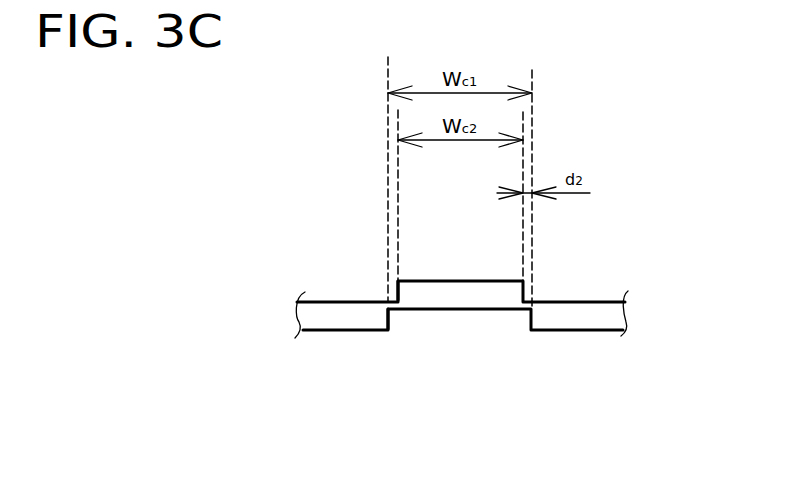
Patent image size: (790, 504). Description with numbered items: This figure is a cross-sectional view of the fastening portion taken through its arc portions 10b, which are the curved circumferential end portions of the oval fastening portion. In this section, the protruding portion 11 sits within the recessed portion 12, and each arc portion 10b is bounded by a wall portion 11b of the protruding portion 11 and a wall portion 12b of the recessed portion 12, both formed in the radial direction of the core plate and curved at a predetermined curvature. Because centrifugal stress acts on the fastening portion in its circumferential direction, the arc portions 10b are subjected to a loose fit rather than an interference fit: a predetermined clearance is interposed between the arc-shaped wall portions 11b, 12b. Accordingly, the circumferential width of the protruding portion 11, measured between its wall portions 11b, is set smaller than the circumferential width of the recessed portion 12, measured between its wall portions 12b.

The arc portion 10b is at (586, 258).
The protruding portion 11 is at (465, 285).
The wall portion of the protruding portion 11b is at (393, 298).
The recessed portion 12 is at (507, 310).
The wall portion of the recessed portion 12b is at (388, 322).